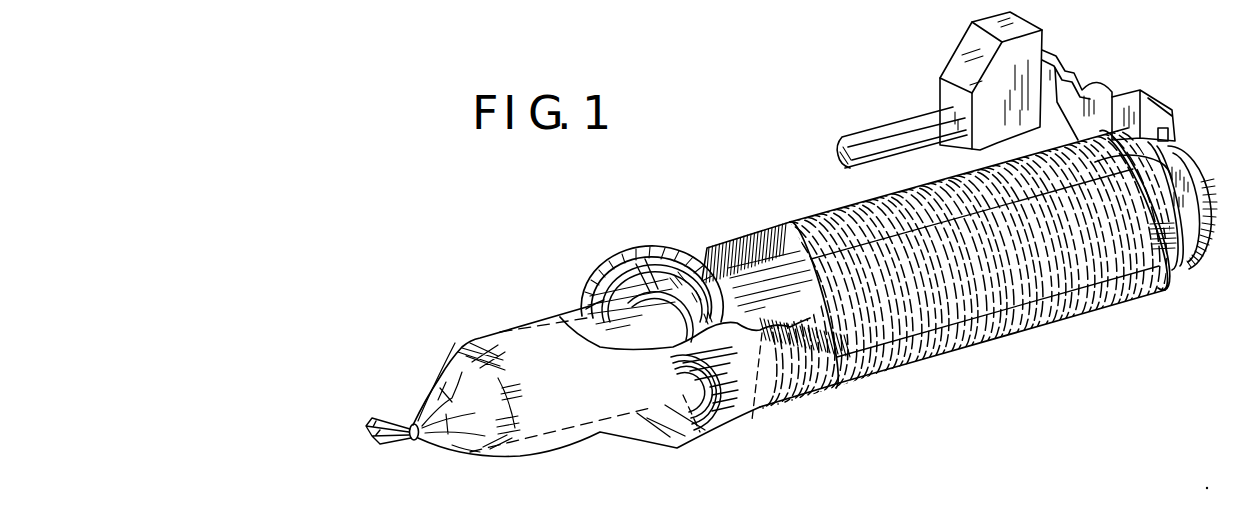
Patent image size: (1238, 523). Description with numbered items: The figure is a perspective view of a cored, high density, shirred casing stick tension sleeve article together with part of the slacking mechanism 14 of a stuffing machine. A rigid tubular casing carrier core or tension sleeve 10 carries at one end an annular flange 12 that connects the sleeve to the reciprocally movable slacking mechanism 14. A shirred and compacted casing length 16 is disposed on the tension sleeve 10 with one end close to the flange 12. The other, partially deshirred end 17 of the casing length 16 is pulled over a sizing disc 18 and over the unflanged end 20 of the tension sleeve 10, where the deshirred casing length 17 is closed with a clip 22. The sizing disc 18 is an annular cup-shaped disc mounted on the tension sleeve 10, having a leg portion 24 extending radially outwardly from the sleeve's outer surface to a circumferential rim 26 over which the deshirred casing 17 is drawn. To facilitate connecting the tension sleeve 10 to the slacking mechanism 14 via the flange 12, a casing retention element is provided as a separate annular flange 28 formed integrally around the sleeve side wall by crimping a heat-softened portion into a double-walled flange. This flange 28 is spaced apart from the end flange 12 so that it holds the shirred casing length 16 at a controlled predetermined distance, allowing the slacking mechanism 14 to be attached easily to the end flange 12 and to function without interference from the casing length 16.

The tension sleeve 10 is at (590, 312).
The annular flange 12 is at (1190, 272).
The slacking mechanism 14 is at (1113, 85).
The shirred and compacted casing length 16 is at (890, 370).
The deshirred casing length 17 is at (508, 330).
The sizing disc 18 is at (707, 262).
The unflanged end 20 is at (458, 348).
The clip 22 is at (412, 440).
The leg portion 24 is at (677, 280).
The circumferential rim 26 is at (627, 262).
The annular flange 28 is at (1178, 273).